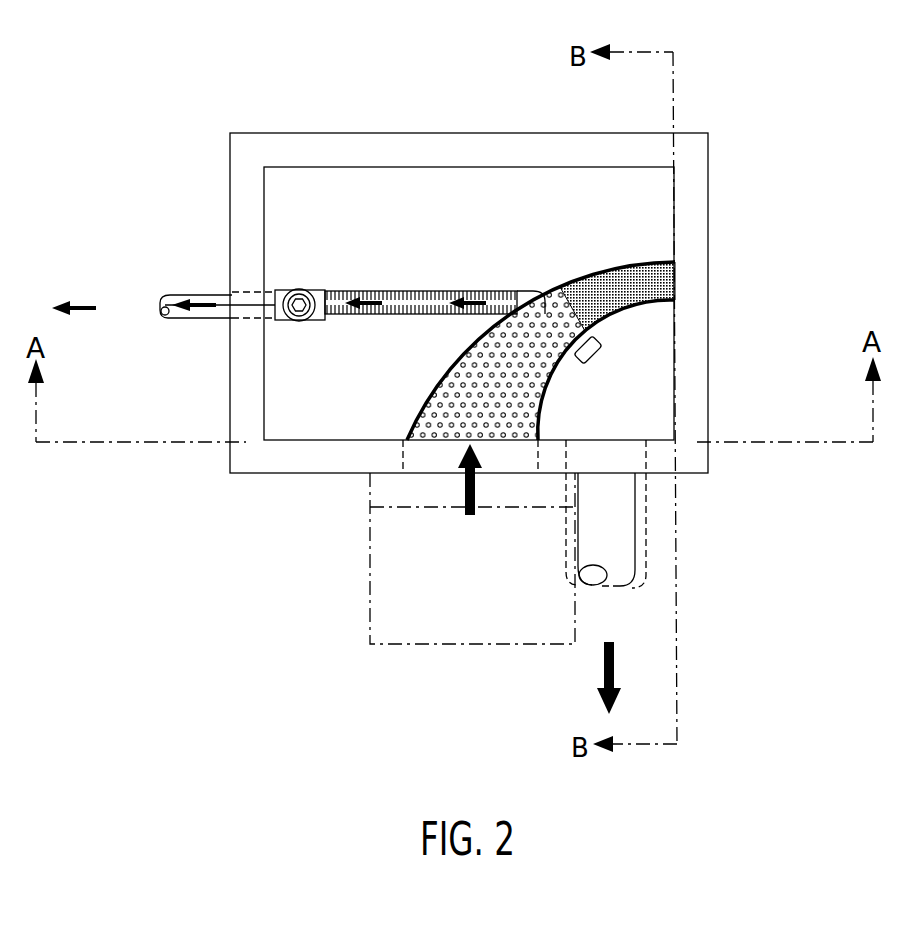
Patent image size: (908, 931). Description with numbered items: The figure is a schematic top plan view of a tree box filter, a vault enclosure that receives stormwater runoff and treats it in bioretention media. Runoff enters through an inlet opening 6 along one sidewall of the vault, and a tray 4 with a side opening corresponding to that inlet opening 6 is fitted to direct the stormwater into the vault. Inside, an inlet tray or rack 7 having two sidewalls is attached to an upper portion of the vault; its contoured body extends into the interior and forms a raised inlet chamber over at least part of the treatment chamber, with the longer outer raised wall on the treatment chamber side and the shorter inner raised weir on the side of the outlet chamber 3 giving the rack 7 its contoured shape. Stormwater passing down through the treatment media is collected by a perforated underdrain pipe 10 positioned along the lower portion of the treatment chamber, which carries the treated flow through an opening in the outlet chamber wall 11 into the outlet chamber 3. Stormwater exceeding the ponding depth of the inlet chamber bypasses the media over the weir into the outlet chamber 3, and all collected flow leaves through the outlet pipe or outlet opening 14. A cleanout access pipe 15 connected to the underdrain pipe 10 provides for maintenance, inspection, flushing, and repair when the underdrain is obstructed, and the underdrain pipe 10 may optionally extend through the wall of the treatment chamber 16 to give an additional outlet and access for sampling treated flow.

The outlet chamber 3 is at (630, 303).
The tray 4 is at (370, 597).
The inlet opening 6 is at (420, 474).
The inlet tray or rack 7 is at (608, 267).
The perforated underdrain pipe 10 is at (345, 291).
The outlet chamber wall 11 is at (598, 357).
The outlet pipe or outlet opening 14 is at (637, 520).
The cleanout access pipe 15 is at (275, 292).
The wall of the treatment chamber 16 is at (185, 294).